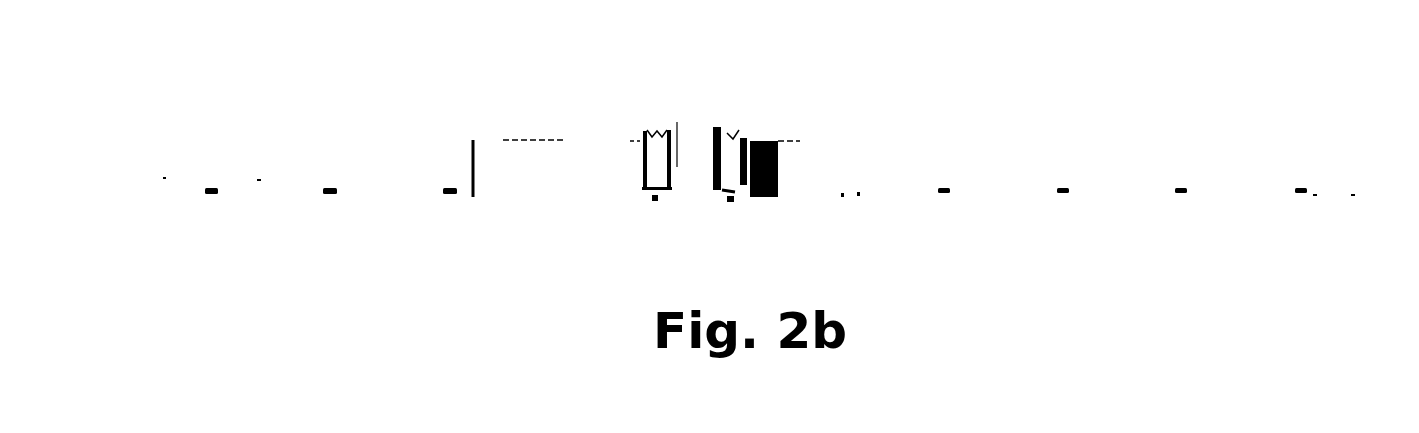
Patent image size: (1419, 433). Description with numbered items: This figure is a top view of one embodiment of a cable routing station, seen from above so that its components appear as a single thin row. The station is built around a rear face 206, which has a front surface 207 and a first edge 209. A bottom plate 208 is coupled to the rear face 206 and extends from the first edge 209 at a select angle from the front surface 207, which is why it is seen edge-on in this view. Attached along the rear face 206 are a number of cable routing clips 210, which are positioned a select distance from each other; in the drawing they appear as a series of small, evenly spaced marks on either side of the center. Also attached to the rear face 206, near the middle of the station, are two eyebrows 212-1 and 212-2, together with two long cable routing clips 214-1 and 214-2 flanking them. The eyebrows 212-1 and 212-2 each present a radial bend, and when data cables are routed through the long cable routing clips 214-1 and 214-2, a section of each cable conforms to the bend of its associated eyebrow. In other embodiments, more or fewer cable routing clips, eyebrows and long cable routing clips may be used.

The rear face 206 is at (1353, 195).
The front surface 207 is at (259, 180).
The bottom plate 208 is at (165, 178).
The first edge 209 is at (1315, 195).
The cable routing clips 210 is at (448, 160).
The eyebrow 212-1 is at (653, 135).
The eyebrow 212-2 is at (733, 137).
The long cable routing clip 214-1 is at (542, 160).
The long cable routing clip 214-2 is at (844, 160).